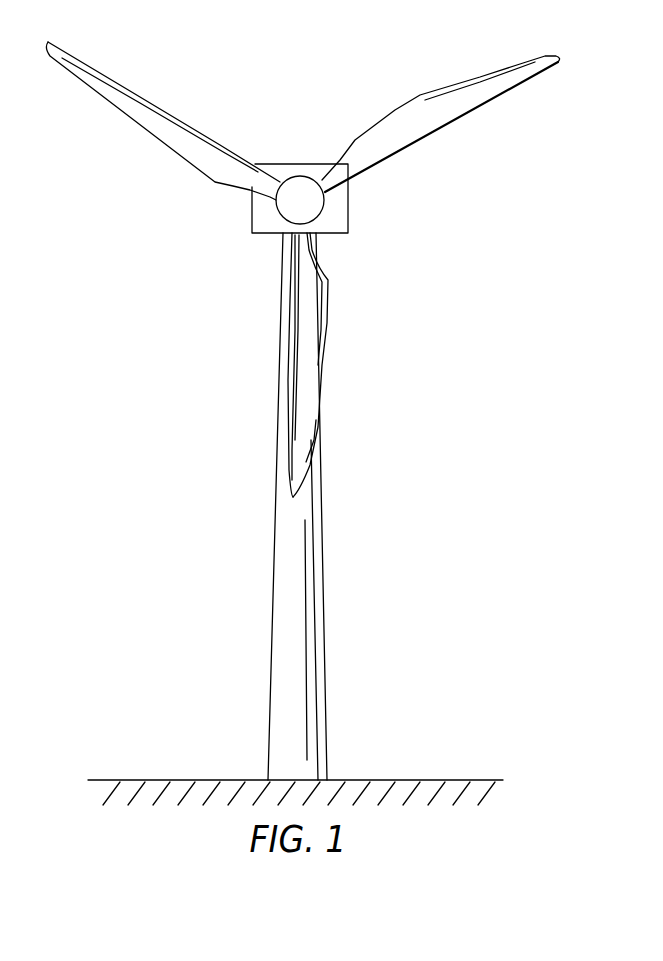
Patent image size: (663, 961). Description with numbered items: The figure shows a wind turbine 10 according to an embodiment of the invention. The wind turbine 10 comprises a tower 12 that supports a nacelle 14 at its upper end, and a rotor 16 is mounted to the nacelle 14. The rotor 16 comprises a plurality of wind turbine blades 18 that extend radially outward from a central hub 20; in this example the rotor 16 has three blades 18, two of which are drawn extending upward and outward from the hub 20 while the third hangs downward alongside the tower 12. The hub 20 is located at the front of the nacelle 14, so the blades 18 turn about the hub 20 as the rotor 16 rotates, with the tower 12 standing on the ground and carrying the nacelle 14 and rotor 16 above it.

The wind turbine 10 is at (152, 497).
The tower 12 is at (326, 614).
The nacelle 14 is at (349, 221).
The rotor 16 is at (200, 229).
The wind turbine blade 18 is at (503, 63).
The hub 20 is at (300, 176).